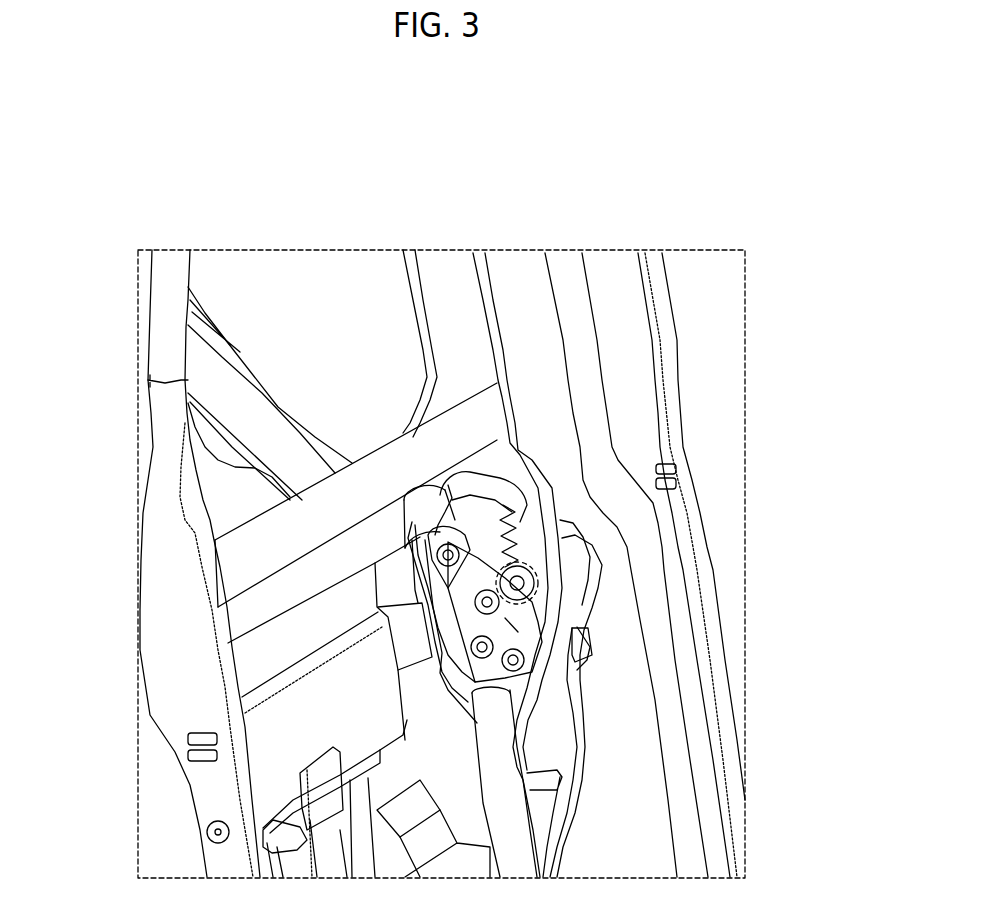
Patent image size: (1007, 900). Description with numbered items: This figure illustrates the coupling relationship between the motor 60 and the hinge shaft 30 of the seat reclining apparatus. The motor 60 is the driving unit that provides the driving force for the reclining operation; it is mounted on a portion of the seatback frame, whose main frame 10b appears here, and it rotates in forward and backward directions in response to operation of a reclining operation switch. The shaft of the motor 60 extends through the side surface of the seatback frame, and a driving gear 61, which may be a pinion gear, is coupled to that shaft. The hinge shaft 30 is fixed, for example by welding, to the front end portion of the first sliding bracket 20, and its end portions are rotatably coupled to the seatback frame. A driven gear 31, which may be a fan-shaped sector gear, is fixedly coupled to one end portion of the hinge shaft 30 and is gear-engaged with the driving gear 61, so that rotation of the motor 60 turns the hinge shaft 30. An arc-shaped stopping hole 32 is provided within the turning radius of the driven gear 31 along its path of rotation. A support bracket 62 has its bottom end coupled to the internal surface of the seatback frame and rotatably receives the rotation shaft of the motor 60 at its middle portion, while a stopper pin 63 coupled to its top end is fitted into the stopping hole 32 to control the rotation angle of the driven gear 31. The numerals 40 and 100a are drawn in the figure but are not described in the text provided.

The main frame 10b is at (692, 478).
The first sliding bracket 20 is at (268, 433).
The hinge shaft 30 is at (250, 618).
The driven gear 31 is at (470, 480).
The stopping hole 32 is at (440, 528).
The pillar 40 is at (190, 322).
The motor 60 is at (512, 593).
The driving gear 61 is at (540, 600).
The support bracket 62 is at (525, 655).
The stopper pin 63 is at (505, 526).
The pillar member 100a is at (449, 275).